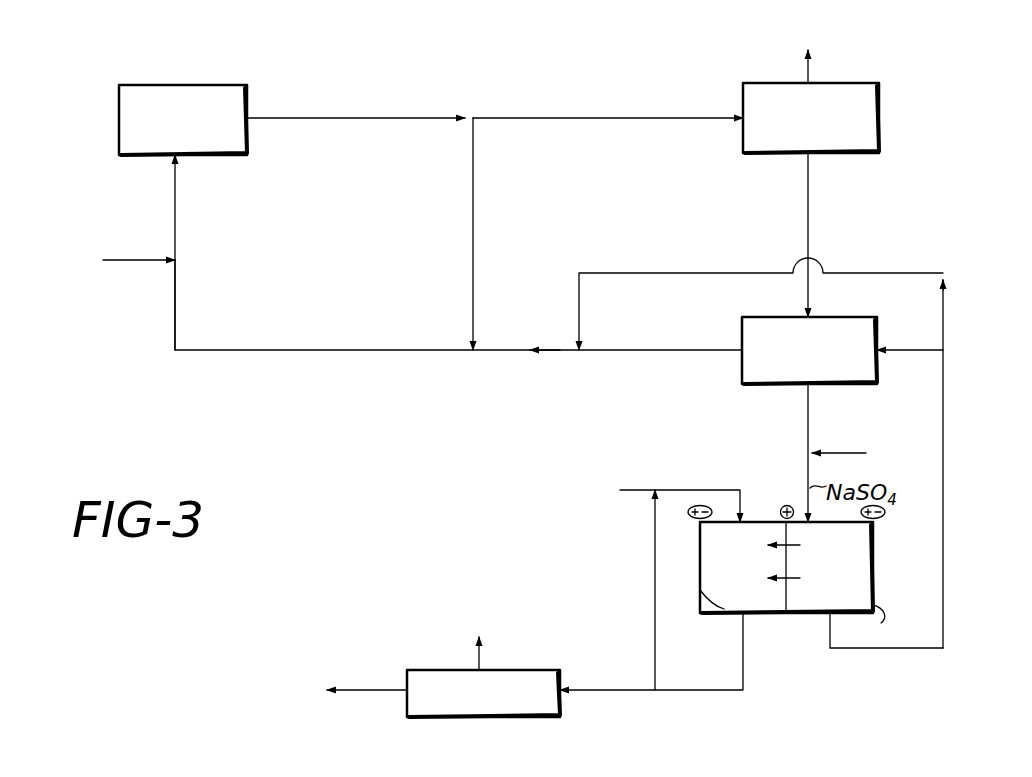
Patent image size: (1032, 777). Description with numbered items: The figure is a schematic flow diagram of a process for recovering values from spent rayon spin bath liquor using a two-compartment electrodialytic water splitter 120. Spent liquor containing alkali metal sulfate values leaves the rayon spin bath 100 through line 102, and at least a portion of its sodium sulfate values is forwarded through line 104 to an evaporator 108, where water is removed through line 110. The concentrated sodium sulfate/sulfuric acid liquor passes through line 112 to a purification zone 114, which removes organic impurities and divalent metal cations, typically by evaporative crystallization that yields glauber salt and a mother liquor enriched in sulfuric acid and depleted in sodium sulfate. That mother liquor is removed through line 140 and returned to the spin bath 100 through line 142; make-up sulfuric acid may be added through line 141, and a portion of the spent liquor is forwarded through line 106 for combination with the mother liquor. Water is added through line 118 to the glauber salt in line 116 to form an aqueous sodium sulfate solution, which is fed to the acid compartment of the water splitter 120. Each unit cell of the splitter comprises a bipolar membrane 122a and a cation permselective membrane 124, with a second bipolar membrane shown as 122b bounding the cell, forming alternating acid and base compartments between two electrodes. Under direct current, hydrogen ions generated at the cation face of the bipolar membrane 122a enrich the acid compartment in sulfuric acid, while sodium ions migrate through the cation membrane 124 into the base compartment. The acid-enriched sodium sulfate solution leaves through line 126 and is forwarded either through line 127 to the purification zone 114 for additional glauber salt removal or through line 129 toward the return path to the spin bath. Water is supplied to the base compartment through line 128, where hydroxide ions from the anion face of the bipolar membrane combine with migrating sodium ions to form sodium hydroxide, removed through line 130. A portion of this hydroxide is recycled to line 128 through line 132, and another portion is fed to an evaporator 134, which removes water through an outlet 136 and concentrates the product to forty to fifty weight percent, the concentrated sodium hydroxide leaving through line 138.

The rayon spin bath 100 is at (142, 52).
The line 102 is at (366, 118).
The line 104 is at (587, 118).
The line 106 is at (473, 212).
The evaporator 108 is at (880, 104).
The line 110 is at (810, 72).
The line 112 is at (810, 200).
The purification zone 114 is at (764, 317).
The line 116 is at (806, 412).
The line 118 is at (866, 453).
The two-compartment electrodialytic water splitter 120 is at (875, 563).
The bipolar membrane 122a is at (716, 606).
The anode electrode 122b is at (912, 627).
The cation permselective membrane 124 is at (788, 604).
The line 126 is at (945, 603).
The line 127 is at (918, 349).
The line 128 is at (715, 456).
The line 129 is at (666, 273).
The line 130 is at (744, 688).
The line 132 is at (653, 600).
The evaporator 134 is at (463, 718).
The water vapor outlet 136 is at (482, 664).
The line 138 is at (384, 657).
The line 140 is at (636, 350).
The line 141 is at (135, 262).
The line 142 is at (176, 308).